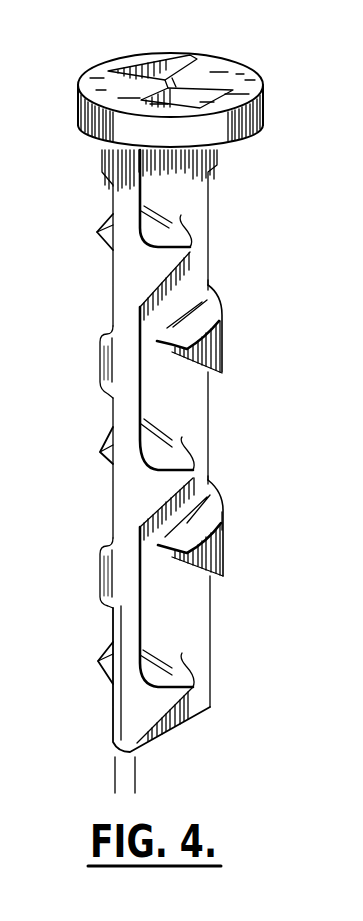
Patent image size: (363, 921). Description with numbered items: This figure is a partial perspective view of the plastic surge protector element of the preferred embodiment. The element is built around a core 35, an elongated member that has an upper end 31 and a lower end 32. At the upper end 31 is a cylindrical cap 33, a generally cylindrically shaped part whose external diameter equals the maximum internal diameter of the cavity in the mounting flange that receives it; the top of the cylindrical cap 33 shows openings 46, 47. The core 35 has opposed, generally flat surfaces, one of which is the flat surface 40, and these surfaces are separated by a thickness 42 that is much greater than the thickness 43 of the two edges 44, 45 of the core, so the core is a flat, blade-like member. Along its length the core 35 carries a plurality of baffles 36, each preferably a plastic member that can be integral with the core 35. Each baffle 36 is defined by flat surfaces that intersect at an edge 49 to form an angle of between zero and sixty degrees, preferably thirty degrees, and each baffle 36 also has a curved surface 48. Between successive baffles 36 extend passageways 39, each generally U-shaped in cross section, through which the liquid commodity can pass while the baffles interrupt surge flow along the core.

The upper end 31 is at (256, 65).
The lower end 32 is at (208, 708).
The cylindrical cap 33 is at (93, 79).
The core 35 is at (212, 398).
The baffle 36 is at (158, 257).
The passageway 39 is at (181, 287).
The flat surface 40 is at (197, 623).
The thickness 42 is at (152, 610).
The thickness 43 is at (165, 797).
The edge 44 is at (122, 358).
The edge 45 is at (210, 428).
The opening 46 is at (156, 72).
The opening 47 is at (198, 93).
The curved surface 48 is at (190, 488).
The edge 49 is at (187, 553).